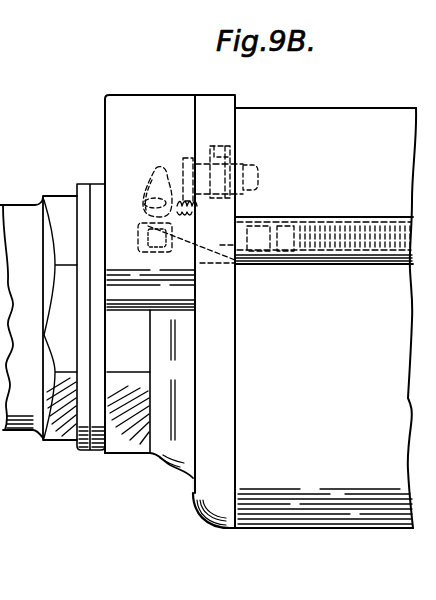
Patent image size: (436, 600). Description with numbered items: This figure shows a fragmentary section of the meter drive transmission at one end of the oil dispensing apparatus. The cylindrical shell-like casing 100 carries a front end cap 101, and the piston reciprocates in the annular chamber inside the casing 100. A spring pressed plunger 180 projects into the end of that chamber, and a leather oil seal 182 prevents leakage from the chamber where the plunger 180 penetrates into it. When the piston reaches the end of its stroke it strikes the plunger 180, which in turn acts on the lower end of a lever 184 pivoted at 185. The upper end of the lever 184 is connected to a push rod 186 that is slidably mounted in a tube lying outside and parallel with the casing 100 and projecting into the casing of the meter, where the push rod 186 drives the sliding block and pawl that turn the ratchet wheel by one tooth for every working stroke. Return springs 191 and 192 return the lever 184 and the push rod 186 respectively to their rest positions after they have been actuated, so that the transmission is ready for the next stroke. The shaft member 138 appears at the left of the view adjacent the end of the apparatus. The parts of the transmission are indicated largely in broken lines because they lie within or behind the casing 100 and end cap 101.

The casing 100 is at (351, 120).
The front end cap 101 is at (172, 444).
The shaft member 138 is at (22, 437).
The spring pressed plunger 180 is at (260, 171).
The leather oil seal 182 is at (238, 146).
The lever 184 is at (156, 167).
The pivot 185 is at (152, 197).
The push rod 186 is at (212, 238).
The return spring 191 is at (146, 207).
The return spring 192 is at (321, 266).